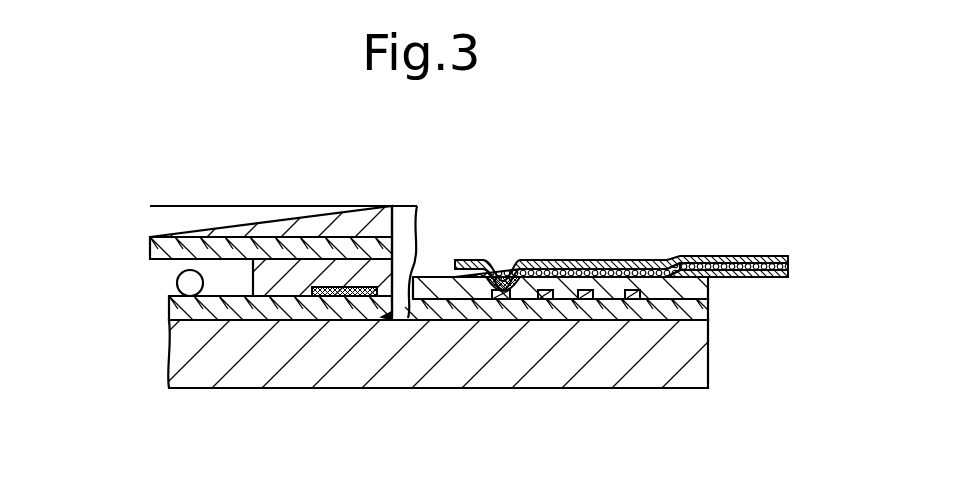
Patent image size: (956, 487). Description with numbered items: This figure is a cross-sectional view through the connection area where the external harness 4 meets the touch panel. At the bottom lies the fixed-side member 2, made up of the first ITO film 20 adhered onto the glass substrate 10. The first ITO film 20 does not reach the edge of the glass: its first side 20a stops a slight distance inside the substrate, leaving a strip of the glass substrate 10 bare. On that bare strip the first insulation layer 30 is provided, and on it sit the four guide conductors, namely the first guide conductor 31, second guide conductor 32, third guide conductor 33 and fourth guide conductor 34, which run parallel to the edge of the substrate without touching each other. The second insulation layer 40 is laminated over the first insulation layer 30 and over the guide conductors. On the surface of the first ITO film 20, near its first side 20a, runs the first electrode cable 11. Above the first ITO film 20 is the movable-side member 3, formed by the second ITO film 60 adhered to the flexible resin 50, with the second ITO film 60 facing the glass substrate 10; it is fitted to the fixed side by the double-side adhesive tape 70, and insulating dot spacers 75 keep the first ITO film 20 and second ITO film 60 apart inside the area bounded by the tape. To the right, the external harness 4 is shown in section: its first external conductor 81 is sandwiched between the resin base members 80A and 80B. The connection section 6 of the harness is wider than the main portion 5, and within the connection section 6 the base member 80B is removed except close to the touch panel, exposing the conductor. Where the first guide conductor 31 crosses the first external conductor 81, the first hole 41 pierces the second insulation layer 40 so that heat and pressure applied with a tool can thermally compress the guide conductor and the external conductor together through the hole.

The fixed-side member 2 is at (381, 373).
The glass substrate 10 is at (169, 355).
The first ITO film 20 is at (169, 312).
The first side of the first ITO film 20a is at (384, 322).
The movable-side member 3 is at (236, 228).
The flexible resin 50 is at (150, 219).
The second ITO film 60 is at (241, 245).
The double-side adhesive tape 70 is at (268, 268).
The first electrode cable 11 is at (340, 287).
The dot spacers 75 is at (177, 284).
The first insulation layer 30 is at (586, 370).
The first guide conductor 31 is at (497, 300).
The second guide conductor 32 is at (585, 300).
The third guide conductor 33 is at (632, 300).
The fourth guide conductor 34 is at (545, 300).
The second insulation layer 40 is at (708, 294).
The first hole 41 is at (509, 262).
The external harness 4 is at (628, 231).
The main portion 5 is at (738, 250).
The connection section 6 is at (636, 250).
The base member 80A is at (777, 256).
The base member 80B is at (773, 279).
The first external conductor 81 is at (795, 258).